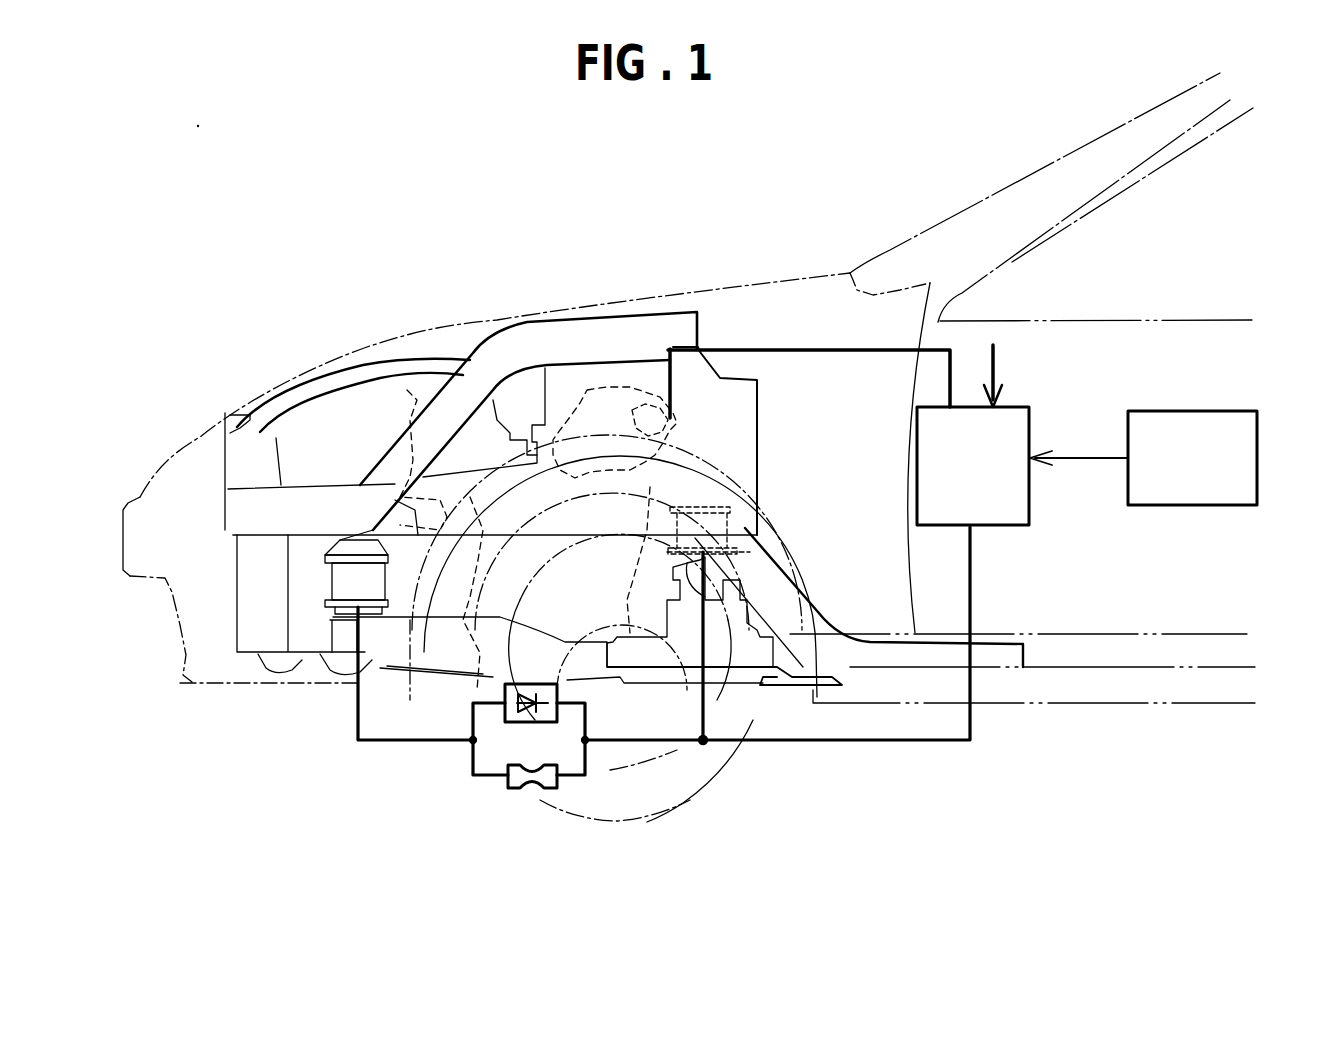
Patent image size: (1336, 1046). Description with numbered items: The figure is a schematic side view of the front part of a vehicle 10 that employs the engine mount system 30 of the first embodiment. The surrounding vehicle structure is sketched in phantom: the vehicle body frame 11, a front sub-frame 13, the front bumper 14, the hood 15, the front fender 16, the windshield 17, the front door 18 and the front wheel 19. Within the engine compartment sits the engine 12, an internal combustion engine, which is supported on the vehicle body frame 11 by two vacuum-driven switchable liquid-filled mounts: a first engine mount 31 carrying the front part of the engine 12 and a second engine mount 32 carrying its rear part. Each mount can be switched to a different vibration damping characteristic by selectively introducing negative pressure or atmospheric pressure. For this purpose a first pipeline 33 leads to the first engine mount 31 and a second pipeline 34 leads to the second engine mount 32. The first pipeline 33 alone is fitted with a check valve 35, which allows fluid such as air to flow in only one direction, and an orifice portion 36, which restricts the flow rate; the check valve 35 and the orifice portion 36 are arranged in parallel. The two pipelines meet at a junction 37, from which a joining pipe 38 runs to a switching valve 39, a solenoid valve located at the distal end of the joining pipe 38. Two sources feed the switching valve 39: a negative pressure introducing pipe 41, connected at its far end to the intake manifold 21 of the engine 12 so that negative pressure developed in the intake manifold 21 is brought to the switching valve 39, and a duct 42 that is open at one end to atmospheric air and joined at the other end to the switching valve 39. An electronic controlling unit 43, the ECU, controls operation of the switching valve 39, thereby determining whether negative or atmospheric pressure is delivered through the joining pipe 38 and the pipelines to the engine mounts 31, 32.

The vehicle 10 is at (420, 215).
The vehicle body frame 11 is at (568, 305).
The engine 12 is at (618, 382).
The front sub-frame 13 is at (430, 685).
The front bumper 14 is at (140, 497).
The hood 15 is at (440, 322).
The front fender 16 is at (792, 300).
The windshield 17 is at (1050, 160).
The front door 18 is at (1173, 638).
The front wheel 19 is at (715, 785).
The intake manifold 21 is at (655, 392).
The engine mount system 30 is at (300, 728).
The first engine mount 31 is at (360, 545).
The second engine mount 32 is at (692, 506).
The first pipeline 33 is at (440, 742).
The second pipeline 34 is at (712, 735).
The check valve 35 is at (530, 682).
The orifice portion 36 is at (516, 790).
The junction 37 is at (706, 746).
The joining pipe 38 is at (972, 727).
The switching valve 39 is at (1000, 527).
The negative pressure introducing pipe 41 is at (866, 355).
The duct 42 is at (980, 345).
The electronic controlling unit 43 is at (1242, 410).